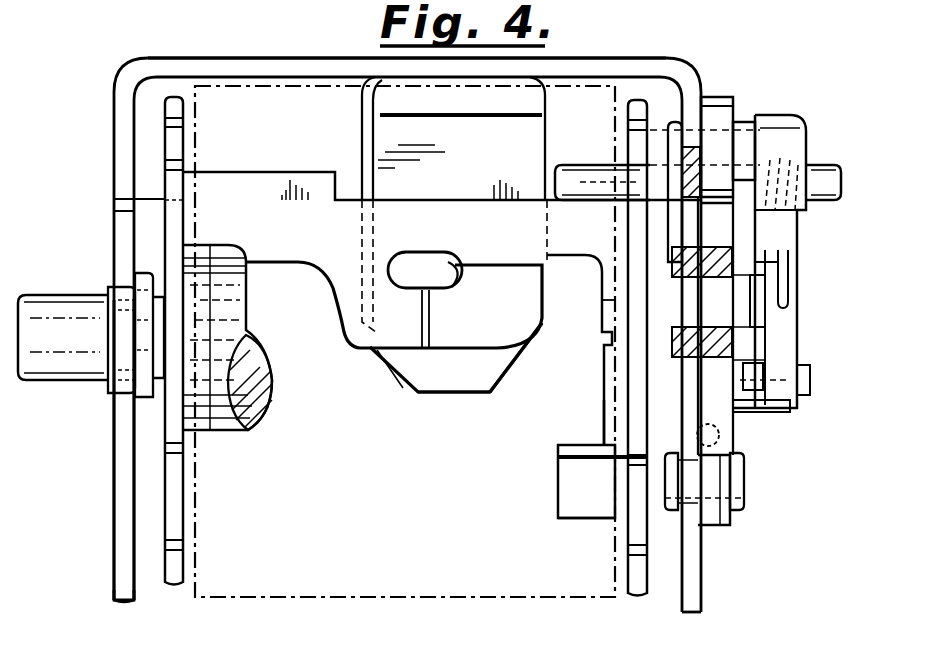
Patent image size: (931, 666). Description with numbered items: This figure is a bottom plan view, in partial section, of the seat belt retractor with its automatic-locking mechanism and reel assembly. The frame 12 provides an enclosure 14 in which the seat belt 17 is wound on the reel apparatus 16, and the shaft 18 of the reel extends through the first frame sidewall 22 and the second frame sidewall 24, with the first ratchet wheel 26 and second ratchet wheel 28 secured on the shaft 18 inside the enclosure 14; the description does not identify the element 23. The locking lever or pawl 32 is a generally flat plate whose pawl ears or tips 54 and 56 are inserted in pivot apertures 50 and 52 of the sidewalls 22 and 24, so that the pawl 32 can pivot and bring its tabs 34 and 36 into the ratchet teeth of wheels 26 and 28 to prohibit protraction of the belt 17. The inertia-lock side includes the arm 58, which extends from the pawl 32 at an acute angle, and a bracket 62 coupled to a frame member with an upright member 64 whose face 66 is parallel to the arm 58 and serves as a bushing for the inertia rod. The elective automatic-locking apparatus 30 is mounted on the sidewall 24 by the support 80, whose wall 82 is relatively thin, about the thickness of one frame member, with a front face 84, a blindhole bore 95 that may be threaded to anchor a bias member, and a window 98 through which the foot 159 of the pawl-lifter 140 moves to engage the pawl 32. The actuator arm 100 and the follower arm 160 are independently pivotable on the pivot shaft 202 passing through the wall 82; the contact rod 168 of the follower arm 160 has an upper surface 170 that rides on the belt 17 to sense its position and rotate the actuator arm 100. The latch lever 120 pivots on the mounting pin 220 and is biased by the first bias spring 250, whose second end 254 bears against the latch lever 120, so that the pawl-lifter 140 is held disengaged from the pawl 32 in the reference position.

The frame 12 is at (562, 57).
The enclosure 14 is at (150, 490).
The reel apparatus 16 is at (222, 432).
The seat belt 17 is at (426, 597).
The shaft 18 is at (56, 381).
The first frame sidewall 22 is at (118, 576).
The top web of bracket 23 is at (328, 62).
The second frame sidewall 24 is at (701, 600).
The first ratchet wheel 26 is at (183, 517).
The second ratchet wheel 28 is at (637, 594).
The automatic-locking apparatus 30 is at (771, 112).
The locking lever or pawl 32 is at (284, 172).
The tab 34 is at (254, 320).
The tab 36 is at (602, 341).
The pivot aperture 50 is at (118, 201).
The pivot aperture 52 is at (657, 192).
The pawl ear or tip 54 is at (120, 226).
The pawl ear or tip 56 is at (686, 230).
The arm 58 is at (495, 264).
The bracket 62 is at (398, 392).
The upright member 64 is at (449, 395).
The face 66 is at (490, 372).
The support 80 is at (718, 95).
The wall 82 is at (738, 120).
The front face 84 is at (734, 524).
The blindhole bore 95 is at (722, 440).
The window 98 is at (742, 322).
The actuator arm 100 is at (813, 131).
The latch lever 120 is at (786, 430).
The pawl-lifter 140 is at (752, 350).
The foot 159 is at (603, 306).
The follower arm 160 is at (576, 521).
The contact rod 168 is at (604, 421).
The upper surface 170 is at (563, 491).
The pivot shaft 202 is at (796, 206).
The mounting pin 220 is at (798, 395).
The first bias spring 250 is at (766, 262).
The second end 254 is at (790, 288).